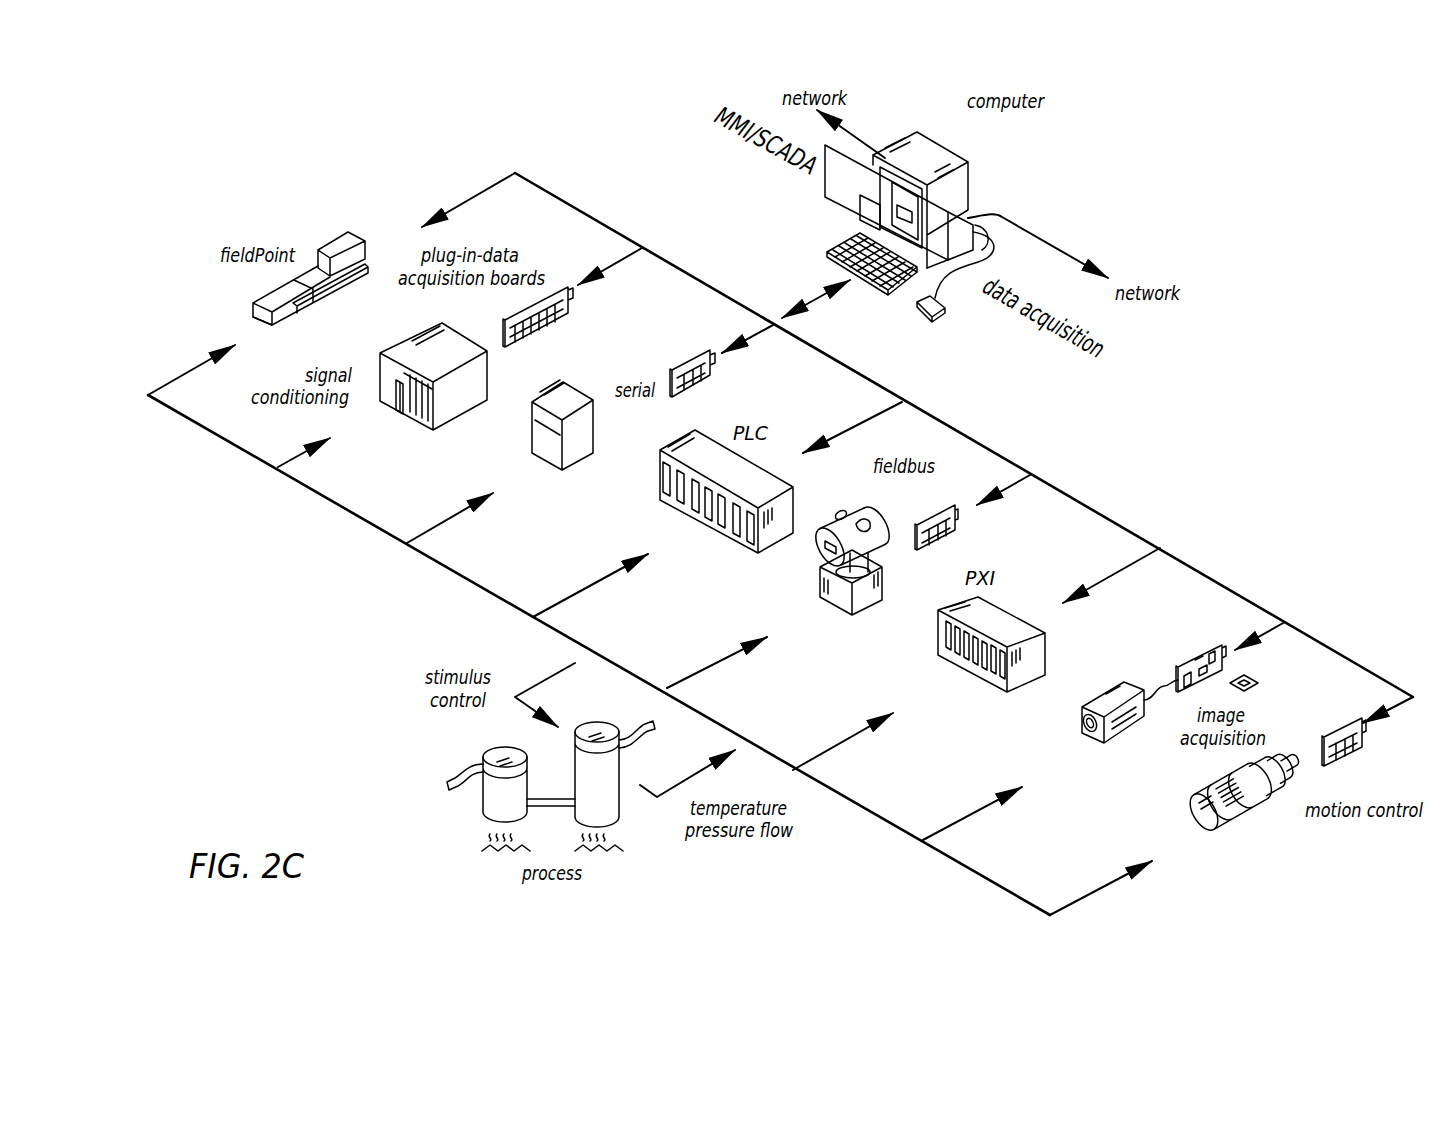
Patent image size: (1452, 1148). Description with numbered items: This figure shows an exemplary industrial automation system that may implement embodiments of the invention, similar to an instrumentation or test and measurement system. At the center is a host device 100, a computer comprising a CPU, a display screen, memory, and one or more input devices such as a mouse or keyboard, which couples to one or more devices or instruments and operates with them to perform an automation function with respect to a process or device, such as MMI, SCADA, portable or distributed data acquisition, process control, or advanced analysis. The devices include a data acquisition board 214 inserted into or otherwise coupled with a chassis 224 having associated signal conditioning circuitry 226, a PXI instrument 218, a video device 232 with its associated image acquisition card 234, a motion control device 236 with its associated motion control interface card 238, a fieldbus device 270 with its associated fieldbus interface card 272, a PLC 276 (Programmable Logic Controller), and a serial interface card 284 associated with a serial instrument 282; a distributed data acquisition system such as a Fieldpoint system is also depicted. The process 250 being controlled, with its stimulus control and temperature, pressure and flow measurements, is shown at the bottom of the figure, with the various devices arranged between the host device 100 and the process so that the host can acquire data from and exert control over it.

The host device 100 is at (940, 150).
The data acquisition board 214 is at (538, 332).
The PXI instrument 218 is at (993, 612).
The chassis 224 is at (407, 350).
The signal conditioning circuitry 226 is at (403, 415).
The video device 232 is at (1113, 680).
The image acquisition card 234 is at (1190, 653).
The motion control device 236 is at (1227, 810).
The motion control interface card 238 is at (1345, 755).
The process 250 is at (457, 778).
The fieldbus device 270 is at (837, 603).
The fieldbus interface card 272 is at (933, 513).
The PLC 276 is at (675, 510).
The serial instrument 282 is at (543, 453).
The serial interface card 284 is at (683, 362).